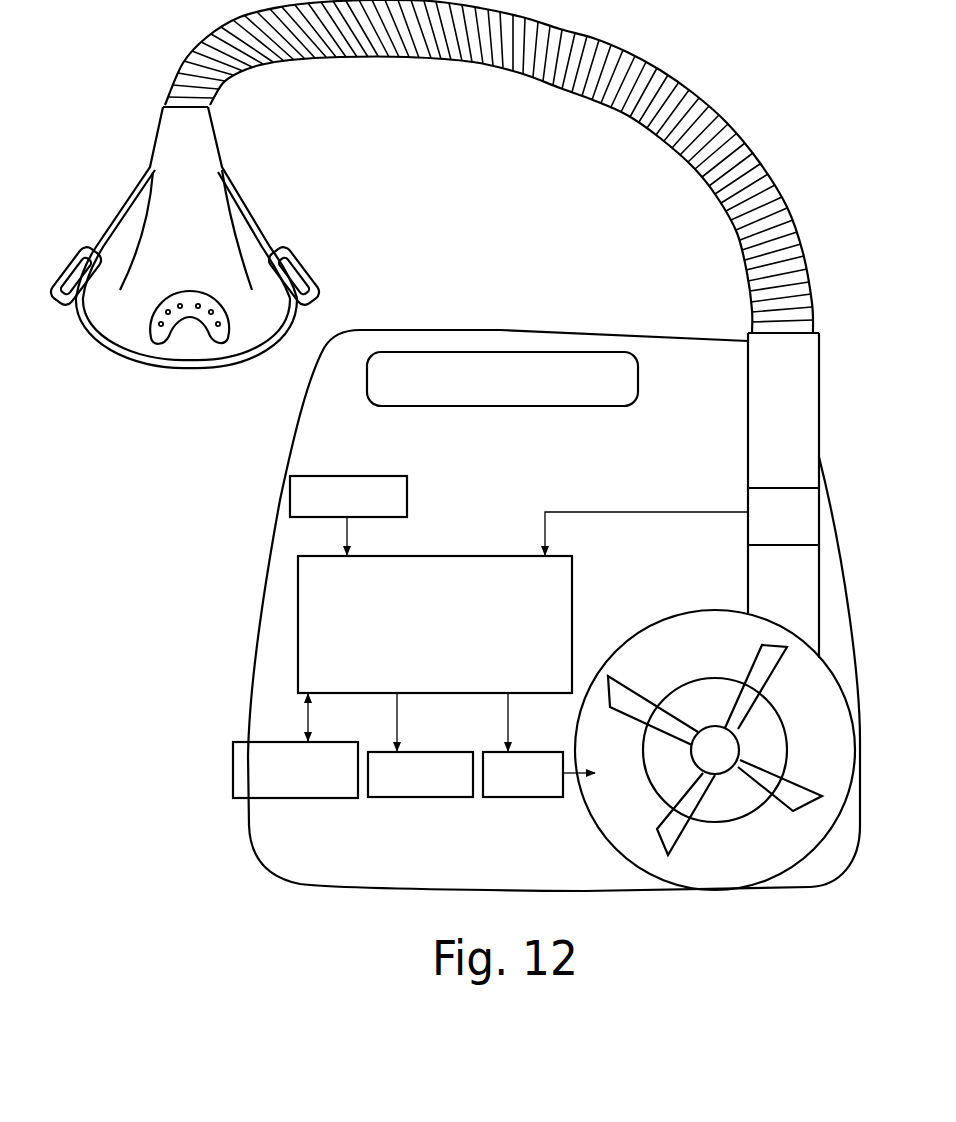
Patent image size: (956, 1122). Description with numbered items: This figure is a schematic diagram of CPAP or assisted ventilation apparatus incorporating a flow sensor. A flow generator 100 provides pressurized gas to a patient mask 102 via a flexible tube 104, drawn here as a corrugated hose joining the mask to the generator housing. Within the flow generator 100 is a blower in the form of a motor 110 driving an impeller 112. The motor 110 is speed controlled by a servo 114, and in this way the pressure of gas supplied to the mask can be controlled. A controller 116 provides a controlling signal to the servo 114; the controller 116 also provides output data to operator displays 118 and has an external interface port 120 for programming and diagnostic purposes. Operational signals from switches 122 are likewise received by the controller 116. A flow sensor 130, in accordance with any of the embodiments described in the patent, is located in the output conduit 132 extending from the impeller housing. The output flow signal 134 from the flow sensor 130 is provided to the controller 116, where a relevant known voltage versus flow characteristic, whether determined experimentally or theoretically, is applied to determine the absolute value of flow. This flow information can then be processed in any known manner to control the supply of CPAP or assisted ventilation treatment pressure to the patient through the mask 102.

The flow generator 100 is at (500, 313).
The patient mask 102 is at (240, 232).
The flexible tube 104 is at (568, 72).
The motor 110 is at (712, 700).
The impeller 112 is at (786, 798).
The servo 114 is at (510, 798).
The controller 116 is at (561, 601).
The operator displays 118 is at (392, 798).
The external interface port 120 is at (285, 798).
The switches 122 is at (373, 476).
The flow sensor 130 is at (757, 500).
The output conduit 132 is at (752, 403).
The output flow signal 134 is at (616, 510).